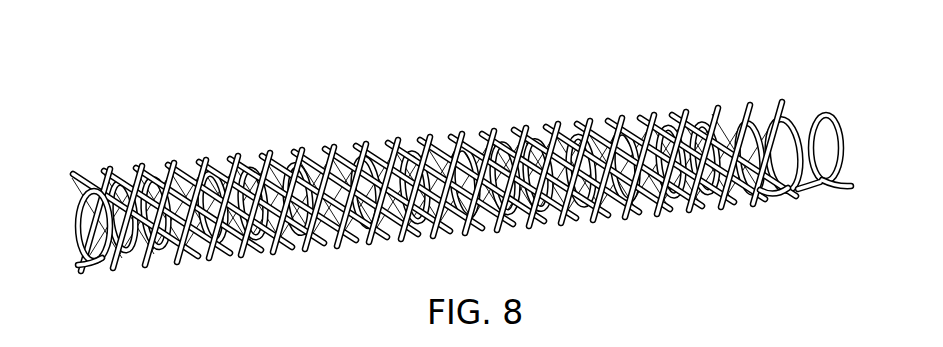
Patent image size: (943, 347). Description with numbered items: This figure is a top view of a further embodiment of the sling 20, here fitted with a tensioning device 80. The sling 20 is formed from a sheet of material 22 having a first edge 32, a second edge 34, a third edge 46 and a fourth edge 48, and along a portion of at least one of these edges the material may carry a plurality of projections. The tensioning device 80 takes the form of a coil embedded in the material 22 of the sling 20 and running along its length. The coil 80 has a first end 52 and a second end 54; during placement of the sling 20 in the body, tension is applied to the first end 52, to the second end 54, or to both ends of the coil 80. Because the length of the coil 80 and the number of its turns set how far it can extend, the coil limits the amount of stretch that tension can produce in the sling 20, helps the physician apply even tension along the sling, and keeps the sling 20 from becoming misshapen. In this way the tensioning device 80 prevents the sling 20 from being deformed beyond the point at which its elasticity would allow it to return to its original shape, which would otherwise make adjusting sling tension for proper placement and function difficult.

The sling 20 is at (456, 181).
The material 22 is at (366, 140).
The first edge 32 is at (246, 140).
The second edge 34 is at (250, 243).
The third edge 46 is at (158, 247).
The fourth edge 48 is at (767, 203).
The first end 52 is at (70, 257).
The second end 54 is at (840, 179).
The tensioning device 80 is at (817, 108).